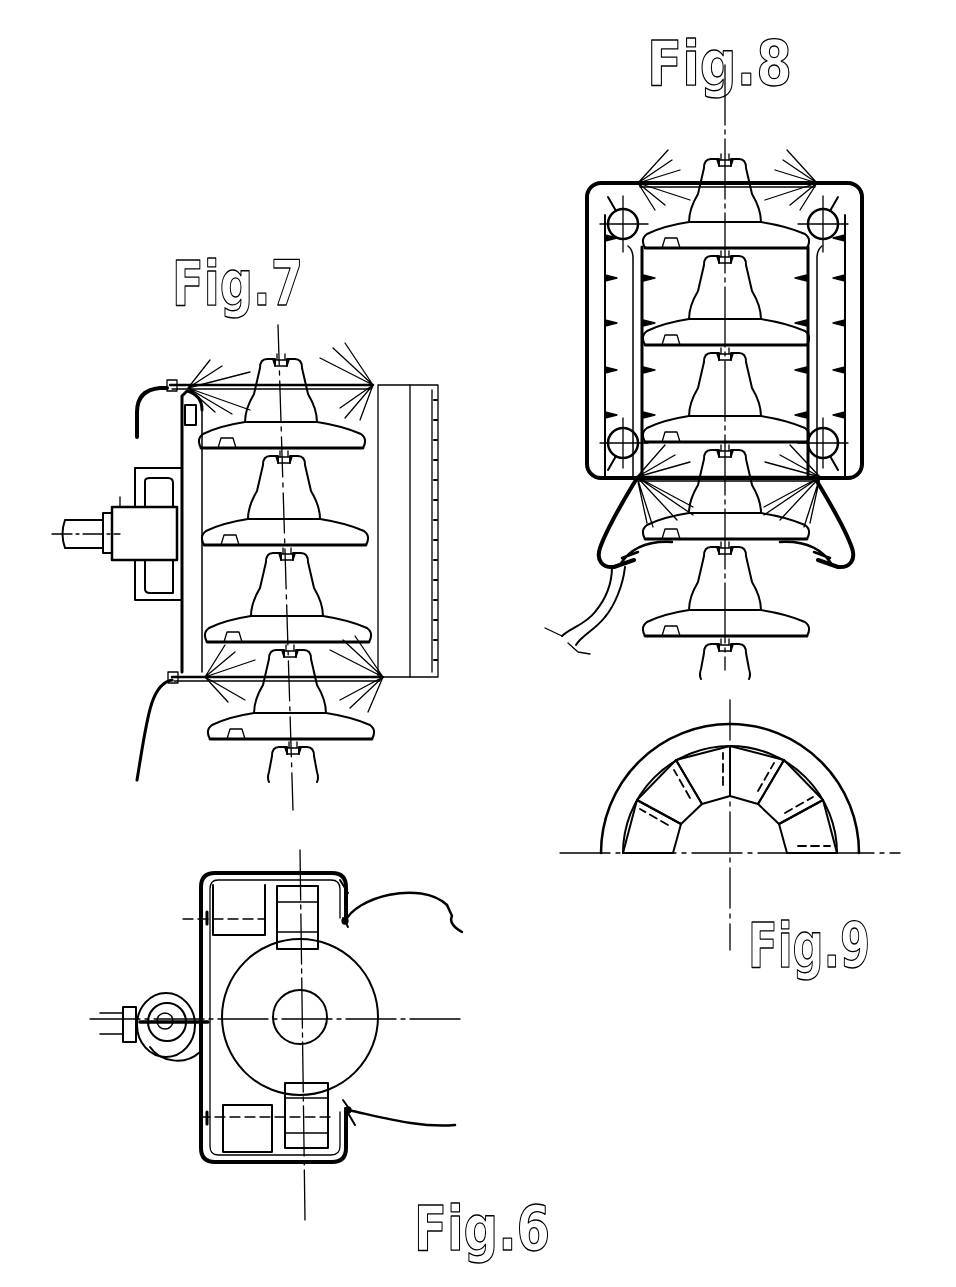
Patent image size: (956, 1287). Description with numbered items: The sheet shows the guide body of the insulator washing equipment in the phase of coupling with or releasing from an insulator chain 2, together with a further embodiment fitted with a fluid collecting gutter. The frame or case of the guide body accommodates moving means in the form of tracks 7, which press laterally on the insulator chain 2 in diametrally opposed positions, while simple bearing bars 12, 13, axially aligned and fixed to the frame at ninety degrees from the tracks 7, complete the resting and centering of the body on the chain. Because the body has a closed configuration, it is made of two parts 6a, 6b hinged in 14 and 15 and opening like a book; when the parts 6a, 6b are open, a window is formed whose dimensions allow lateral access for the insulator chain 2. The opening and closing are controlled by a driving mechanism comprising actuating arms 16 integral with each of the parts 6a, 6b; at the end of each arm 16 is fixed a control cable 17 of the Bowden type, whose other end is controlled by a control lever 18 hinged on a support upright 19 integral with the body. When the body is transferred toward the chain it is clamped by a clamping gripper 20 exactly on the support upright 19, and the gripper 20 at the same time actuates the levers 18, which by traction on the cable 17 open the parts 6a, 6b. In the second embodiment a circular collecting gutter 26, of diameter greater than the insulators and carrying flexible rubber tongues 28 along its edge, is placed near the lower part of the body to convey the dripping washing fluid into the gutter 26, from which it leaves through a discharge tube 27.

In FIG. 7, the insulator chain 2 is at (333, 536).
In FIG. 8, the insulator chain 2 is at (775, 630).
In FIG. 6, the insulator chain 2 is at (368, 1030).
In FIG. 7, the first part of guide body 6a is at (400, 563).
In FIG. 6, the first part of guide body 6a is at (417, 894).
In FIG. 6, the second part of guide body 6b is at (440, 1126).
In FIG. 8, the track 7 is at (598, 343).
In FIG. 6, the bearing bar 12 is at (205, 1047).
In FIG. 6, the bearing bar 13 is at (465, 933).
In FIG. 6, the hinge 14 is at (349, 924).
In FIG. 6, the hinge 15 is at (349, 1105).
In FIG. 6, the actuating arm 16 is at (349, 894).
In FIG. 6, the control cable 17 is at (198, 968).
In FIG. 6, the control lever 18 is at (178, 1000).
In FIG. 7, the support upright 19 is at (140, 597).
In FIG. 6, the support upright 19 is at (200, 1040).
In FIG. 7, the clamping gripper 20 is at (130, 560).
In FIG. 6, the clamping gripper 20 is at (140, 1048).
In FIG. 8, the collecting gutter 26 is at (614, 518).
In FIG. 9, the collecting gutter 26 is at (822, 780).
In FIG. 8, the discharge tube 27 is at (590, 620).
In FIG. 8, the guide segments 28 is at (650, 548).
In FIG. 9, the guide segments 28 is at (668, 790).